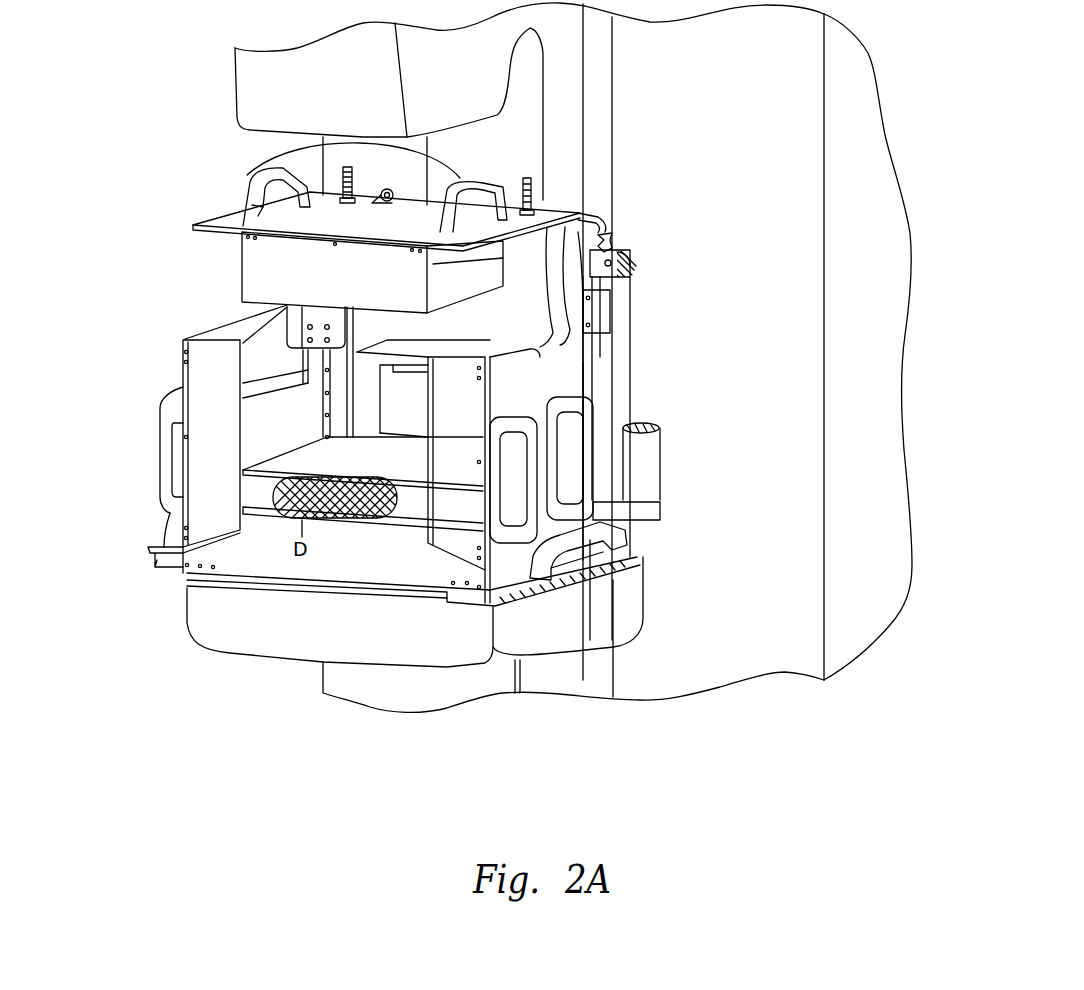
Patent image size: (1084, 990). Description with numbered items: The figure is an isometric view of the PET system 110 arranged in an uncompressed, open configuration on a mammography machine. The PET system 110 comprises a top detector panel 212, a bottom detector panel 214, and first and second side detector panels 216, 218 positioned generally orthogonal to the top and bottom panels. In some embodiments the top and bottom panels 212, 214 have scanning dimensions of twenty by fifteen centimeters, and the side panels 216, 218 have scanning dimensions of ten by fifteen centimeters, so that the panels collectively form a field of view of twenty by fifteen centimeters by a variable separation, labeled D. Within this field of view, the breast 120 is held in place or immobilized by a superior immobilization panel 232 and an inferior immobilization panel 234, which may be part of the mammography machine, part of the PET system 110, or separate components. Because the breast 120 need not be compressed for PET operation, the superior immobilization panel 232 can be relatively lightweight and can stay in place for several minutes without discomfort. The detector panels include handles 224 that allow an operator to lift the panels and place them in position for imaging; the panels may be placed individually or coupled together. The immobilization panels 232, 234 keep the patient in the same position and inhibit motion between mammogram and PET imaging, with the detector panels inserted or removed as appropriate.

The PET system 110 is at (133, 211).
The handles 224 is at (502, 543).
The top detector panel 212 is at (253, 267).
The superior immobilization panel 232 is at (305, 458).
The first side detector panel 216 is at (193, 337).
The second side detector panel 218 is at (543, 373).
The breast 120 is at (272, 497).
The inferior immobilization panel 234 is at (400, 520).
The bottom detector panel 214 is at (260, 552).